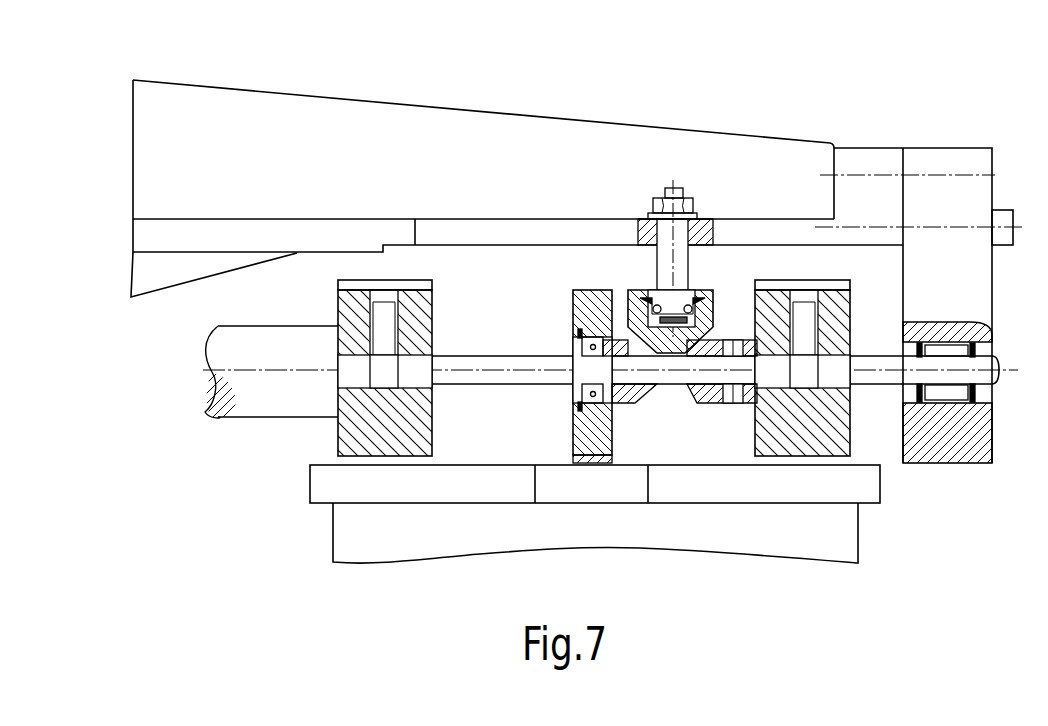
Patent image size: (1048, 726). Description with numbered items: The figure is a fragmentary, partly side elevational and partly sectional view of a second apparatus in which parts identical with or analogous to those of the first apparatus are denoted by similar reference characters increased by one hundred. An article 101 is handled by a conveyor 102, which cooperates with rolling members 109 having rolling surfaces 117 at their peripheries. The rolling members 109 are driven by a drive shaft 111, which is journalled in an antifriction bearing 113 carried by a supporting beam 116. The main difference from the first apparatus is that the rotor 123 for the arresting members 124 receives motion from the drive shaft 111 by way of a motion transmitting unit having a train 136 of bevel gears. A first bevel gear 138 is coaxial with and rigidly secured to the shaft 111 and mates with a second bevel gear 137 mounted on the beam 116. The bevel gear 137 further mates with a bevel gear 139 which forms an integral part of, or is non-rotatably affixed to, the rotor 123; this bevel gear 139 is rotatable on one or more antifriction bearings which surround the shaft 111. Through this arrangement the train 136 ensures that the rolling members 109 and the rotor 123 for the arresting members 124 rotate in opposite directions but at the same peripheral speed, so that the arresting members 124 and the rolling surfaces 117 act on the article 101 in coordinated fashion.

The article 101 is at (385, 506).
The conveyor 102 is at (413, 537).
The rolling members 109 is at (362, 428).
The drive shaft 111 is at (263, 348).
The antifriction bearing 113 is at (957, 405).
The supporting beam 116 is at (276, 118).
The rolling surfaces 117 is at (378, 292).
The rotor 123 is at (592, 426).
The arresting members 124 is at (588, 464).
The train of bevel gears 136 is at (676, 421).
The second bevel gear 137 is at (636, 292).
The first bevel gear 138 is at (733, 404).
The bevel gear 139 is at (630, 404).